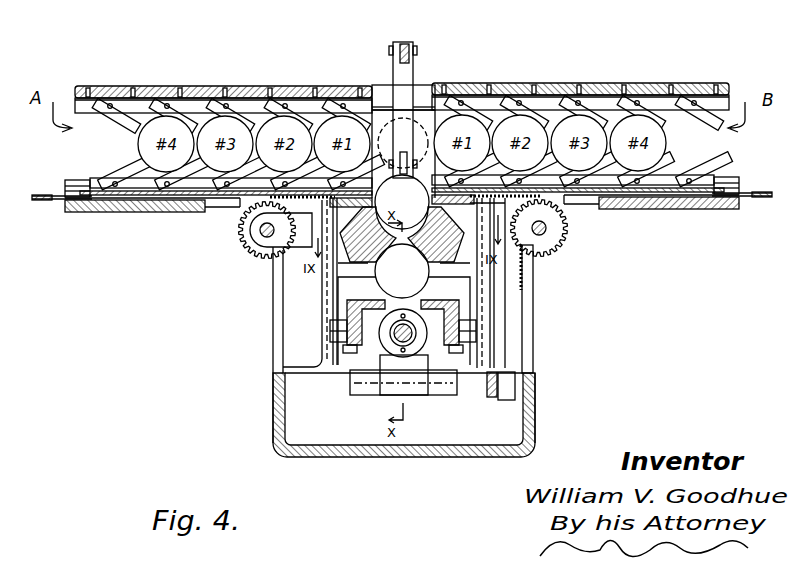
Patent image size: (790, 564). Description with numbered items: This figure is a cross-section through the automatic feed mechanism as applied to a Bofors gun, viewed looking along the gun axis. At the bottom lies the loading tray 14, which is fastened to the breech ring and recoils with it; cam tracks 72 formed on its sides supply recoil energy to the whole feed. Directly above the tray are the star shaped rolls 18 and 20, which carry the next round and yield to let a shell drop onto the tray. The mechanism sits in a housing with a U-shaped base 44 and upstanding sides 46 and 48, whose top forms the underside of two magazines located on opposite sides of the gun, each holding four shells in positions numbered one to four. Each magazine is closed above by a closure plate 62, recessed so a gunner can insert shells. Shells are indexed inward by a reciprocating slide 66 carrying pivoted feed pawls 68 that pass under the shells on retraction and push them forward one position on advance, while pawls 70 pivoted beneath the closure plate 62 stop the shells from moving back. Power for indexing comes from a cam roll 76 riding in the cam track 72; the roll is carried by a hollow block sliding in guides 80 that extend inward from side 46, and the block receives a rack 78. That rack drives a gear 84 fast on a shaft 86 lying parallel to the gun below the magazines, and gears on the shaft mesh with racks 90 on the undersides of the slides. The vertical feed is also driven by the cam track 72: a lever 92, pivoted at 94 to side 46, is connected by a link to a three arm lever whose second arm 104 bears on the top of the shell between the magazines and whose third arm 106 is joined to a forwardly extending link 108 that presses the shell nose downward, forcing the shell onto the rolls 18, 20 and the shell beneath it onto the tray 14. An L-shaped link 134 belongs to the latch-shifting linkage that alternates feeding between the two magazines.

The loading tray 14 is at (462, 288).
The star shaped roll 18 is at (353, 247).
The star shaped roll 20 is at (458, 248).
The U-shaped base 44 is at (417, 462).
The upstanding side 46 is at (534, 402).
The upstanding side 48 is at (276, 402).
The closure plate 62 is at (200, 86).
The reciprocating slide 66 is at (100, 180).
The feed pawl 68 is at (183, 195).
The pawl 70 is at (240, 113).
The cam track 72 is at (354, 302).
The cam roll 76 is at (345, 328).
The rack 78 is at (534, 269).
The guide 80 is at (292, 347).
The gear 84 is at (240, 228).
The shaft 86 is at (260, 234).
The rack 90 is at (312, 199).
The lever 92 is at (489, 386).
The pivot 94 is at (507, 397).
The second arm 104 is at (405, 137).
The third arm 106 is at (408, 76).
The forwardly extending link 108 is at (405, 44).
The L-shaped link 134 is at (44, 200).